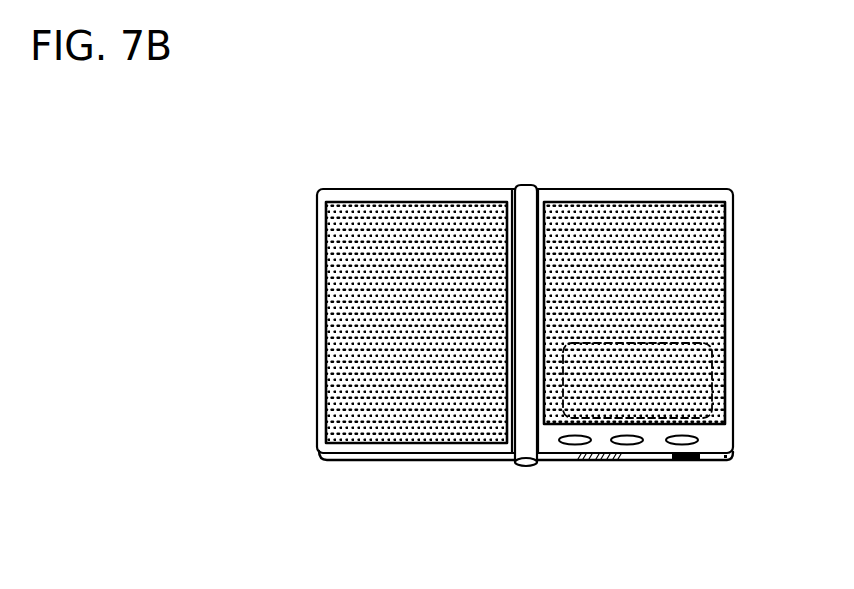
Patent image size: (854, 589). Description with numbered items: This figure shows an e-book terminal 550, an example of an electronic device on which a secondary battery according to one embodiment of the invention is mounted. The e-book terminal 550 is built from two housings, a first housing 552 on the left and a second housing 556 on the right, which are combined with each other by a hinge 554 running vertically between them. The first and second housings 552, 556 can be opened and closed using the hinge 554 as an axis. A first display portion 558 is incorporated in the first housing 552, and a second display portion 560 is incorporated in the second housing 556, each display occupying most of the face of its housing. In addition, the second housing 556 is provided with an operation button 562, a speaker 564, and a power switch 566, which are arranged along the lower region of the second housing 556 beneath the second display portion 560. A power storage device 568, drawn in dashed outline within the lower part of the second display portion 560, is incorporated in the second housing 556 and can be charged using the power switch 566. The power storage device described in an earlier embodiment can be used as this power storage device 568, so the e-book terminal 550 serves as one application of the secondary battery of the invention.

The e-book terminal 550 is at (548, 150).
The first housing 552 is at (322, 257).
The hinge 554 is at (528, 440).
The second housing 556 is at (732, 257).
The first display portion 558 is at (355, 353).
The second display portion 560 is at (697, 310).
The operation button 562 is at (667, 443).
The speaker 564 is at (583, 460).
The power switch 566 is at (673, 462).
The power storage device 568 is at (707, 395).